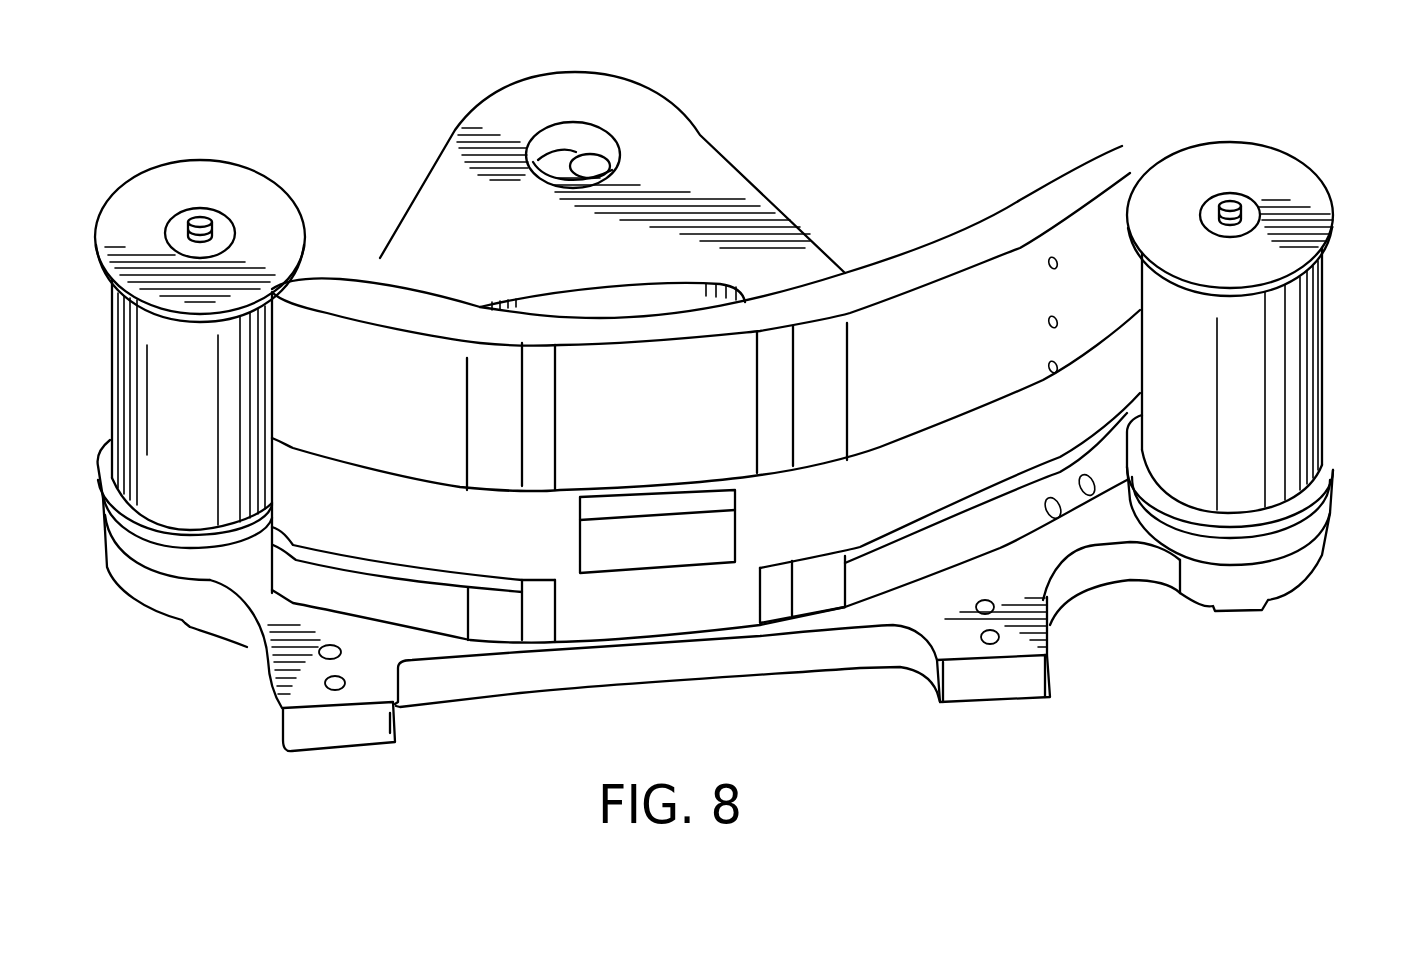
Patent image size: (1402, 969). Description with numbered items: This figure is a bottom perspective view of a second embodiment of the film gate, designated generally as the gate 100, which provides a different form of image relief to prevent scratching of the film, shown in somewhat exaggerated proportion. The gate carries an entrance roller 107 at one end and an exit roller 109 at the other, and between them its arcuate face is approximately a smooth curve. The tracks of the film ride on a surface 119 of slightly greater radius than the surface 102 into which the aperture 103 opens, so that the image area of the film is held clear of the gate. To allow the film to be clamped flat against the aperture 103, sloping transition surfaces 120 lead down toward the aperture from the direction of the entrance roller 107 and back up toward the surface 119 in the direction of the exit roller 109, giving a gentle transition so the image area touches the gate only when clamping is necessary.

The gate 100 is at (846, 90).
The surface 102 is at (467, 549).
The aperture 103 is at (673, 551).
The entrance roller 107 is at (1280, 362).
The exit roller 109 is at (137, 343).
The surface 119 is at (387, 382).
The sloping transition surfaces 120 is at (553, 451).